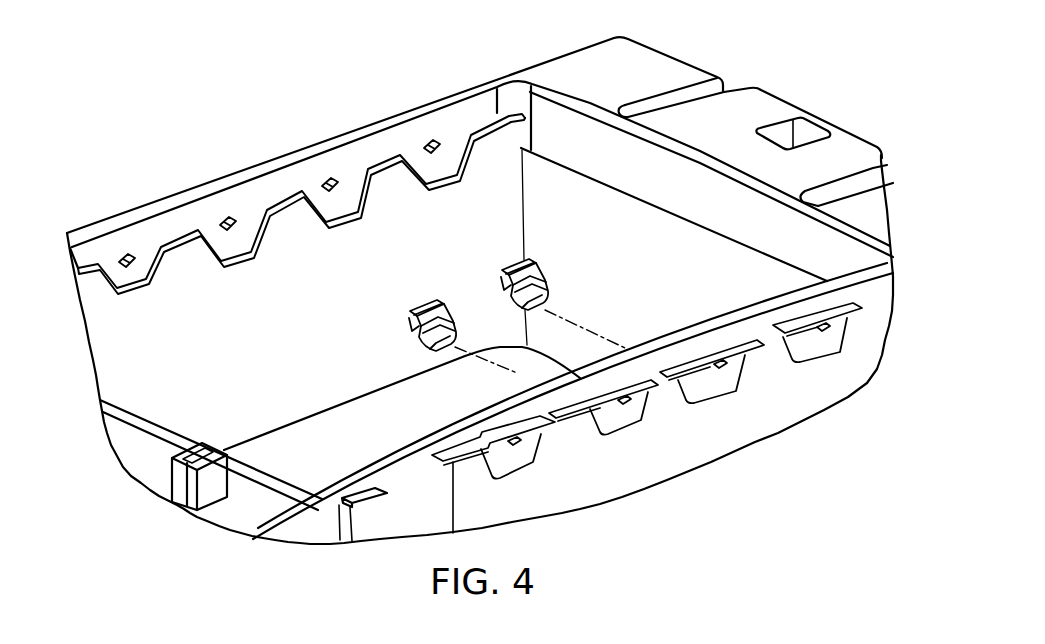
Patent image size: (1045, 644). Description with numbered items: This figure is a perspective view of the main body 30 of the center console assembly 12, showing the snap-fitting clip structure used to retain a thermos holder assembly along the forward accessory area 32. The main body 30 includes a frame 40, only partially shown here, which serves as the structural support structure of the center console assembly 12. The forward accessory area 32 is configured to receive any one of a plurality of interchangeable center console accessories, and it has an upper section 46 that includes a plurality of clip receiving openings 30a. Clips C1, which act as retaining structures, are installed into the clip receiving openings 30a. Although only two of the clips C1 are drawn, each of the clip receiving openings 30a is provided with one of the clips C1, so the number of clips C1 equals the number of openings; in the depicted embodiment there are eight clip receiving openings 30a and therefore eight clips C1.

The center console assembly 12 is at (119, 151).
The main body 30 is at (390, 203).
The clip receiving openings 30a is at (132, 268).
The forward accessory area 32 is at (322, 139).
The frame 40 is at (170, 222).
The upper section 46 is at (260, 176).
The clips C1 is at (416, 308).